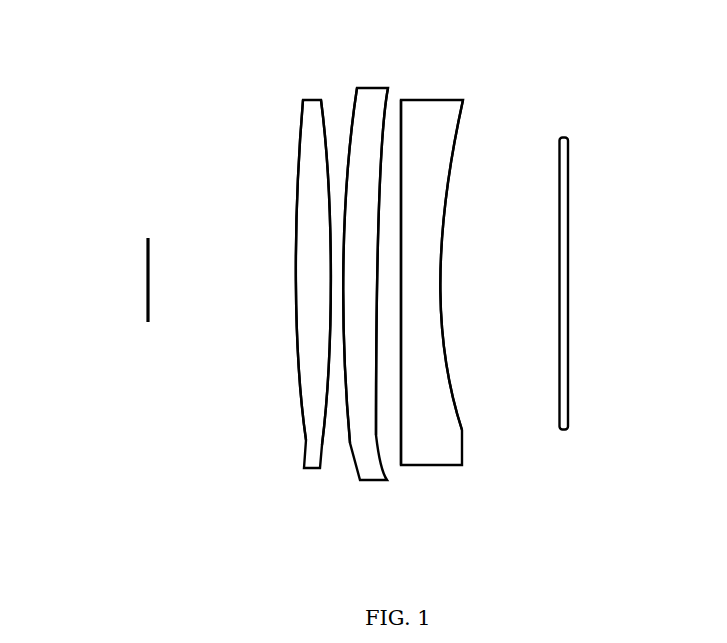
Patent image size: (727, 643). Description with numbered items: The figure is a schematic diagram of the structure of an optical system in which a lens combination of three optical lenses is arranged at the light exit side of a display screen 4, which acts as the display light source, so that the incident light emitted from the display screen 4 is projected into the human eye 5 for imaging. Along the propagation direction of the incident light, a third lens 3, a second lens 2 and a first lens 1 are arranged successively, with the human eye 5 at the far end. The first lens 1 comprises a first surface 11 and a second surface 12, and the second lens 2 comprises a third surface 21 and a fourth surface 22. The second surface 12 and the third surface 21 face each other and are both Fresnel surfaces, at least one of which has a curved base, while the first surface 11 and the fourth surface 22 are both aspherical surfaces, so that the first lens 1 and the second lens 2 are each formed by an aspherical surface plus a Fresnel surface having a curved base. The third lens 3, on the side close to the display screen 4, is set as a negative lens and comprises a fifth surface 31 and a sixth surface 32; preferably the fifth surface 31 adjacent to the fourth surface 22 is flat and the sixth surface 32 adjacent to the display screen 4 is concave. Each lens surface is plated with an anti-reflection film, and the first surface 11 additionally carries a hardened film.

The first lens 1 is at (303, 112).
The first surface 11 is at (304, 440).
The second surface 12 is at (323, 447).
The second lens 2 is at (373, 88).
The third surface 21 is at (350, 443).
The fourth surface 22 is at (378, 438).
The third lens 3 is at (448, 100).
The fifth surface 31 is at (403, 442).
The sixth surface 32 is at (462, 430).
The display screen 4 is at (568, 417).
The human eye 5 is at (148, 290).